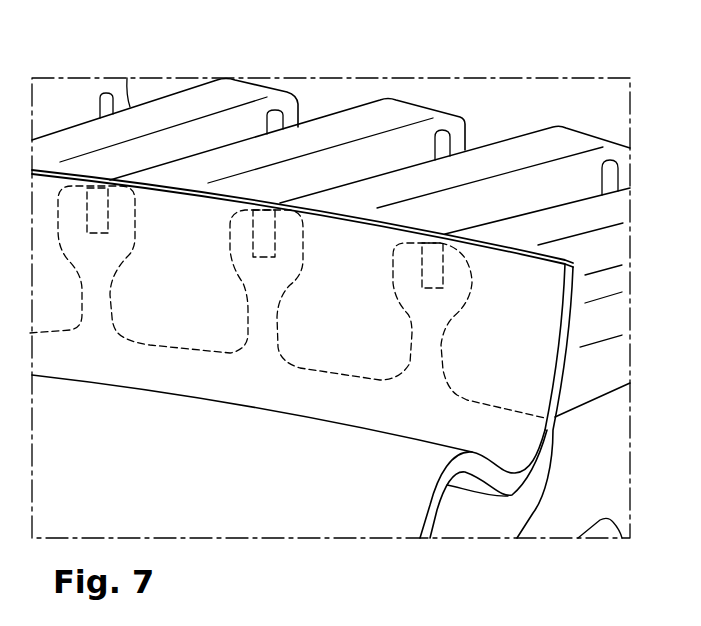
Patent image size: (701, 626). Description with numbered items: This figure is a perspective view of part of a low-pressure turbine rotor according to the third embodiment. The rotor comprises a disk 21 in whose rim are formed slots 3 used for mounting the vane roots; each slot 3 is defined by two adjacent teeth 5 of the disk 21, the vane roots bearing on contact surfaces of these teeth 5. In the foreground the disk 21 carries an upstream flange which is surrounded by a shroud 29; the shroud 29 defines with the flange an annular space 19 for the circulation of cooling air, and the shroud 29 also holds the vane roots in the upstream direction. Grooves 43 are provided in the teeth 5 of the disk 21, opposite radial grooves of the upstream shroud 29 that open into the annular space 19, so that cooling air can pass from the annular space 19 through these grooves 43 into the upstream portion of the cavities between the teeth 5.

The slot 3 is at (322, 98).
The tooth 5 is at (537, 178).
The annular space 19 is at (455, 512).
The disk 21 is at (592, 454).
The shroud 29 is at (510, 483).
The groove 43 is at (432, 275).